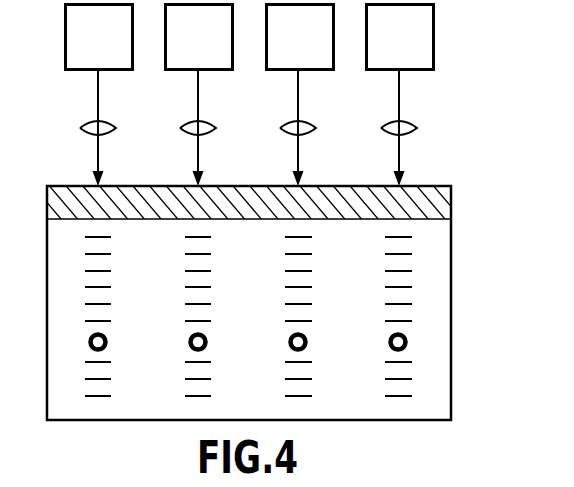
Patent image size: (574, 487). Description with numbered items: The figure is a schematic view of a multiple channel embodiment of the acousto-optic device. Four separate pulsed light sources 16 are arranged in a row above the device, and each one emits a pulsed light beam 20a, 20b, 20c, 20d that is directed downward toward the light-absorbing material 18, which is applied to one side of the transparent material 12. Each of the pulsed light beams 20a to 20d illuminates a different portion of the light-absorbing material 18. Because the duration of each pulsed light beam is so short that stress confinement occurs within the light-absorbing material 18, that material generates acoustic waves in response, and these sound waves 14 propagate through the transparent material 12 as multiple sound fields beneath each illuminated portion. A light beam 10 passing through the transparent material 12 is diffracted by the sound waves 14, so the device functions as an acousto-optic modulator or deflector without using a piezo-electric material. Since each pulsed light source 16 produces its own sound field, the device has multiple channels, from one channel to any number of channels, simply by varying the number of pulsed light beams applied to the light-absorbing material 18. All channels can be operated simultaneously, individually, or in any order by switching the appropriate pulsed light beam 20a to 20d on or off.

The light beam 10 is at (189, 343).
The transparent material 12 is at (451, 297).
The sound waves 14 is at (100, 304).
The pulsed light source 16 is at (113, 48).
The light-absorbing material 18 is at (451, 197).
The pulsed light beam 20a is at (97, 97).
The pulsed light beam 20b is at (197, 97).
The pulsed light beam 20c is at (297, 97).
The pulsed light beam 20d is at (398, 97).